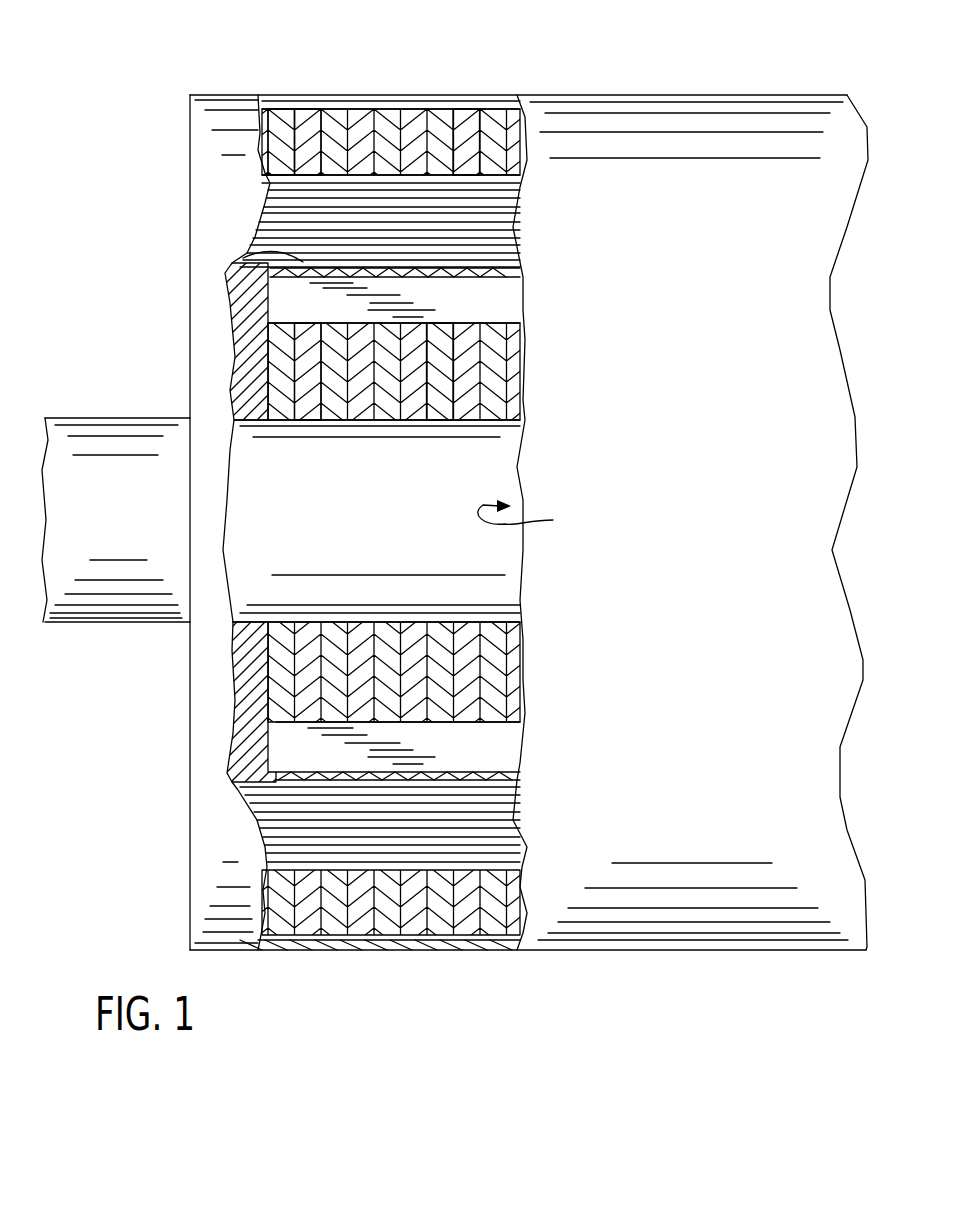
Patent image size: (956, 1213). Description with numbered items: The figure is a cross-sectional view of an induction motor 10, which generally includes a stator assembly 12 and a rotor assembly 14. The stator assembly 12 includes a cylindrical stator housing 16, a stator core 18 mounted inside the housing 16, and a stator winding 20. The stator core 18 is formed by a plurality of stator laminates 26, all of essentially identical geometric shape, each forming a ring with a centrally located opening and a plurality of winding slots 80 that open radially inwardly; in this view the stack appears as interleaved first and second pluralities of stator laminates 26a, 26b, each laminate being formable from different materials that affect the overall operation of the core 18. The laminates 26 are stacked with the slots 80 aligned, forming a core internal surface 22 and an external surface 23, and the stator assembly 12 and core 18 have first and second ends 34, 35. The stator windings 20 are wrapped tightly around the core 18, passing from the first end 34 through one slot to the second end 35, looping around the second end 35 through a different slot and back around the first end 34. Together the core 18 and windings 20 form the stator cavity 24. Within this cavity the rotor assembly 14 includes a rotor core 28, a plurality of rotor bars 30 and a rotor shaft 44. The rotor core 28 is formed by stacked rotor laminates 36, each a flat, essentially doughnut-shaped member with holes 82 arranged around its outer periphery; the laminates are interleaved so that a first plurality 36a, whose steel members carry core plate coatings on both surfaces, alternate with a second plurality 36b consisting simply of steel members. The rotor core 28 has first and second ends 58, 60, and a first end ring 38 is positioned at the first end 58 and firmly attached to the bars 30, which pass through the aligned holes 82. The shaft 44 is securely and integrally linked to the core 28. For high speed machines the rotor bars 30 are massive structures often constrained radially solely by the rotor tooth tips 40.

The induction motor 10 is at (362, 988).
The stator assembly 12 is at (313, 132).
The rotor assembly 14 is at (513, 783).
The stator housing 16 is at (355, 97).
The stator core 18 is at (425, 110).
The stator winding 20 is at (490, 200).
The core internal surface 22 is at (262, 192).
The external surface 23 is at (387, 107).
The stator cavity 24 is at (300, 263).
The stator laminates 26 is at (311, 122).
The stator laminates 26a is at (268, 112).
The stator laminates 26b is at (327, 133).
The rotor core 28 is at (513, 368).
The rotor bars 30 is at (520, 318).
The first end 34 is at (205, 95).
The second end 35 is at (738, 95).
The rotor laminates 36 is at (312, 722).
The first plurality of rotor laminates 36a is at (298, 421).
The second plurality of rotor laminates 36b is at (437, 421).
The first end ring 38 is at (237, 770).
The rotor tooth tips 40 is at (522, 270).
The rotor shaft 44 is at (82, 418).
The first end 58 is at (252, 304).
The second end 60 is at (413, 556).
The winding slots 80 is at (520, 190).
The holes 82 is at (290, 328).